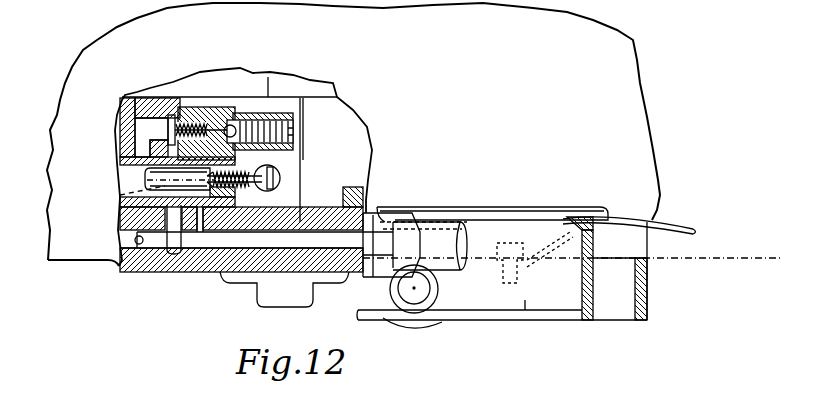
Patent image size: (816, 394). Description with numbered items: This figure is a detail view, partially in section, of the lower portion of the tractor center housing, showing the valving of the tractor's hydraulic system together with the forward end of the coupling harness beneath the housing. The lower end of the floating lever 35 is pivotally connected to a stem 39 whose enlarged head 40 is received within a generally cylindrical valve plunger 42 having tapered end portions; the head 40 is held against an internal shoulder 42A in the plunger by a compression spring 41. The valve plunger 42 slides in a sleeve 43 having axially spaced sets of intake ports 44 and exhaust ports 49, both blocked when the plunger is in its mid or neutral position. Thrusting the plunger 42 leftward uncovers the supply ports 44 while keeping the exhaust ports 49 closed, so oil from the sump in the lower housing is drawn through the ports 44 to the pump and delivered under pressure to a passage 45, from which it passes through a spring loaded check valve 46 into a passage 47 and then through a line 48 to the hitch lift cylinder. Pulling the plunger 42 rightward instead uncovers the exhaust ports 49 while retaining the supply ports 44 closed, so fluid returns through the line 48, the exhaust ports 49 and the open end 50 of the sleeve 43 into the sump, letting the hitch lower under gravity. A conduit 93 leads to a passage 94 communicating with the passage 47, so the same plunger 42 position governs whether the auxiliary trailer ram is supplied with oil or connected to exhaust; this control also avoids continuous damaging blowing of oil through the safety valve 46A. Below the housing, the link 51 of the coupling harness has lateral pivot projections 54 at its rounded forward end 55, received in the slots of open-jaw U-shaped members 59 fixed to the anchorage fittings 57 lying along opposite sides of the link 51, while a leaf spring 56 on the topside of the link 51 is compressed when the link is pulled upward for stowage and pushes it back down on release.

The floating lever 35 is at (282, 150).
The stem 39 is at (281, 180).
The enlarged head 40 is at (181, 180).
The compression spring 41 is at (252, 188).
The valve plunger 42 is at (147, 180).
The internal shoulder 42A is at (236, 198).
The sleeve 43 is at (126, 160).
The intake ports 44 is at (200, 210).
The passage 45 is at (140, 124).
The spring loaded check valve 46 is at (182, 116).
The safety valve 46A is at (240, 124).
The passage 47 is at (180, 225).
The line 48 is at (135, 240).
The exhaust ports 49 is at (120, 195).
The open end 50 is at (128, 175).
The link 51 is at (606, 305).
The lateral pivot projections 54 is at (434, 290).
The rounded forward end 55 is at (396, 326).
The leaf spring 56 is at (676, 234).
The anchorage fittings 57 is at (526, 300).
The U-shaped members 59 is at (366, 322).
The conduit 93 is at (455, 226).
The passage 94 is at (248, 238).